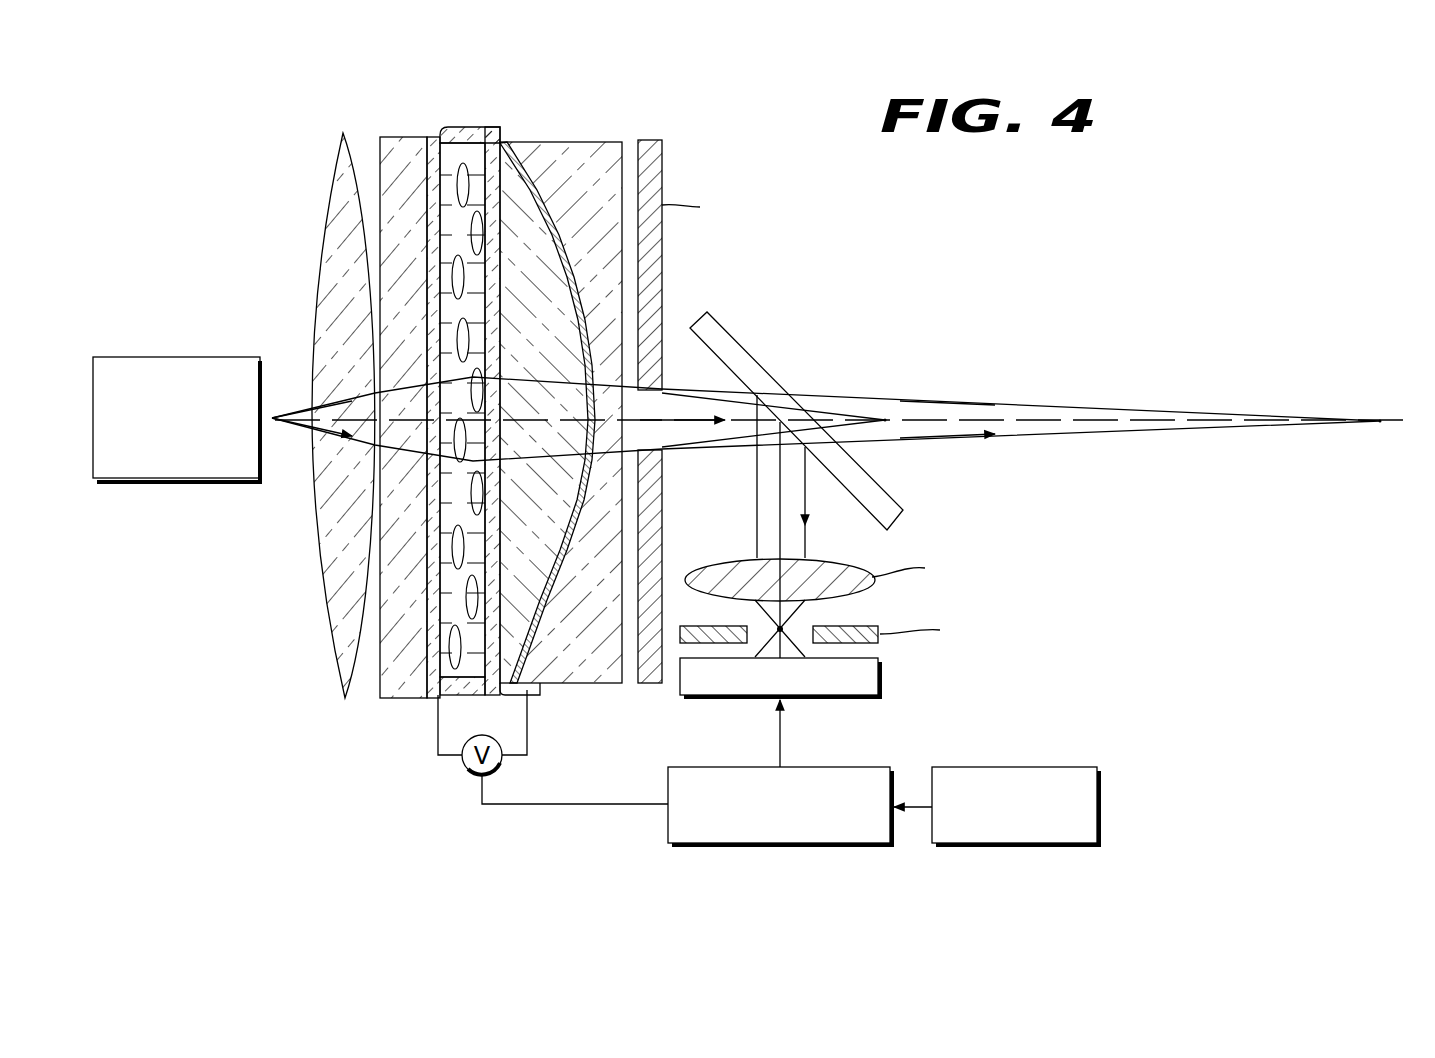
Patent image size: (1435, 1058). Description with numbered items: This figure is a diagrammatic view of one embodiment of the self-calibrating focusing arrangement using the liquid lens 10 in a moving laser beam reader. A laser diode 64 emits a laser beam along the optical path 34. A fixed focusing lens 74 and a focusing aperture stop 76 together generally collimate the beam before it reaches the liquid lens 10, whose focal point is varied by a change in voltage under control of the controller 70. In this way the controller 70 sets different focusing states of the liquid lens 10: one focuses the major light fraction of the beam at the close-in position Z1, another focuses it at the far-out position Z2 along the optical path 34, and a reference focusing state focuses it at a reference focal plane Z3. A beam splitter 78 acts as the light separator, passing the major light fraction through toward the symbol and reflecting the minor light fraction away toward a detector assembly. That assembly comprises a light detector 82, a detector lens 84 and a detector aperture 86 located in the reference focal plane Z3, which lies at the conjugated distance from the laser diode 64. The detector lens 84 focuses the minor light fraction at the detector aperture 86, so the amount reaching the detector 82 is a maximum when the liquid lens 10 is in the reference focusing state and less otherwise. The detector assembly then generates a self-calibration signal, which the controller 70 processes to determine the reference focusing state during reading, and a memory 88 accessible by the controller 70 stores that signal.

The liquid lens 10 is at (373, 106).
The fixed focusing lens 74 is at (336, 183).
The laser diode 64 is at (176, 356).
The focusing aperture stop 76 is at (663, 158).
The beam splitter 78 is at (747, 352).
The optical path 34 is at (1050, 421).
The close-in position Z1 is at (898, 421).
The far-out position Z2 is at (1353, 428).
The reference focal plane Z3 is at (785, 628).
The detector lens 84 is at (880, 584).
The detector aperture 86 is at (909, 645).
The light detector 82 is at (742, 698).
The controller 70 is at (780, 846).
The memory 88 is at (1012, 846).